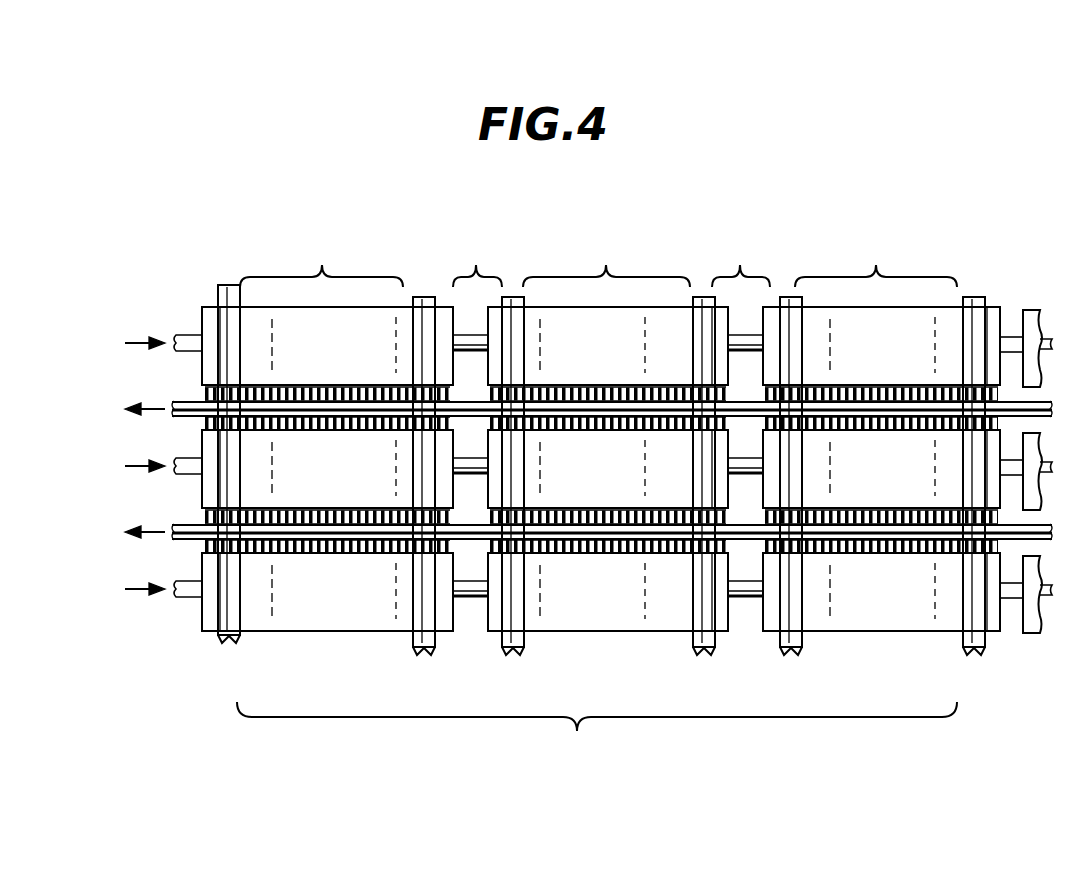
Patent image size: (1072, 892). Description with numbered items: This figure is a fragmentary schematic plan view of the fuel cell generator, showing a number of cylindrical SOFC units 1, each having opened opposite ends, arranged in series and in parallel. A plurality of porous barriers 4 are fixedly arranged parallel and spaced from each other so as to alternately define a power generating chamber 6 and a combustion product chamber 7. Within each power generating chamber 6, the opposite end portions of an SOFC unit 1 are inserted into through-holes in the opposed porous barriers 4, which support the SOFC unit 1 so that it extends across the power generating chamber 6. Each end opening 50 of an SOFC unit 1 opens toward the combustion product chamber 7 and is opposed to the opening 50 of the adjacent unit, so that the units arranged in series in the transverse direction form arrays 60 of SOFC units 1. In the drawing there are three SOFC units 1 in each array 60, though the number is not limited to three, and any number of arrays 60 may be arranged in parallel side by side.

The cylindrical SOFC unit 1 is at (350, 612).
The porous barrier 4 is at (228, 292).
The power generating chamber 6 is at (598, 256).
The combustion product chamber 7 is at (611, 258).
The opening 50 is at (455, 380).
The array 60 is at (597, 738).